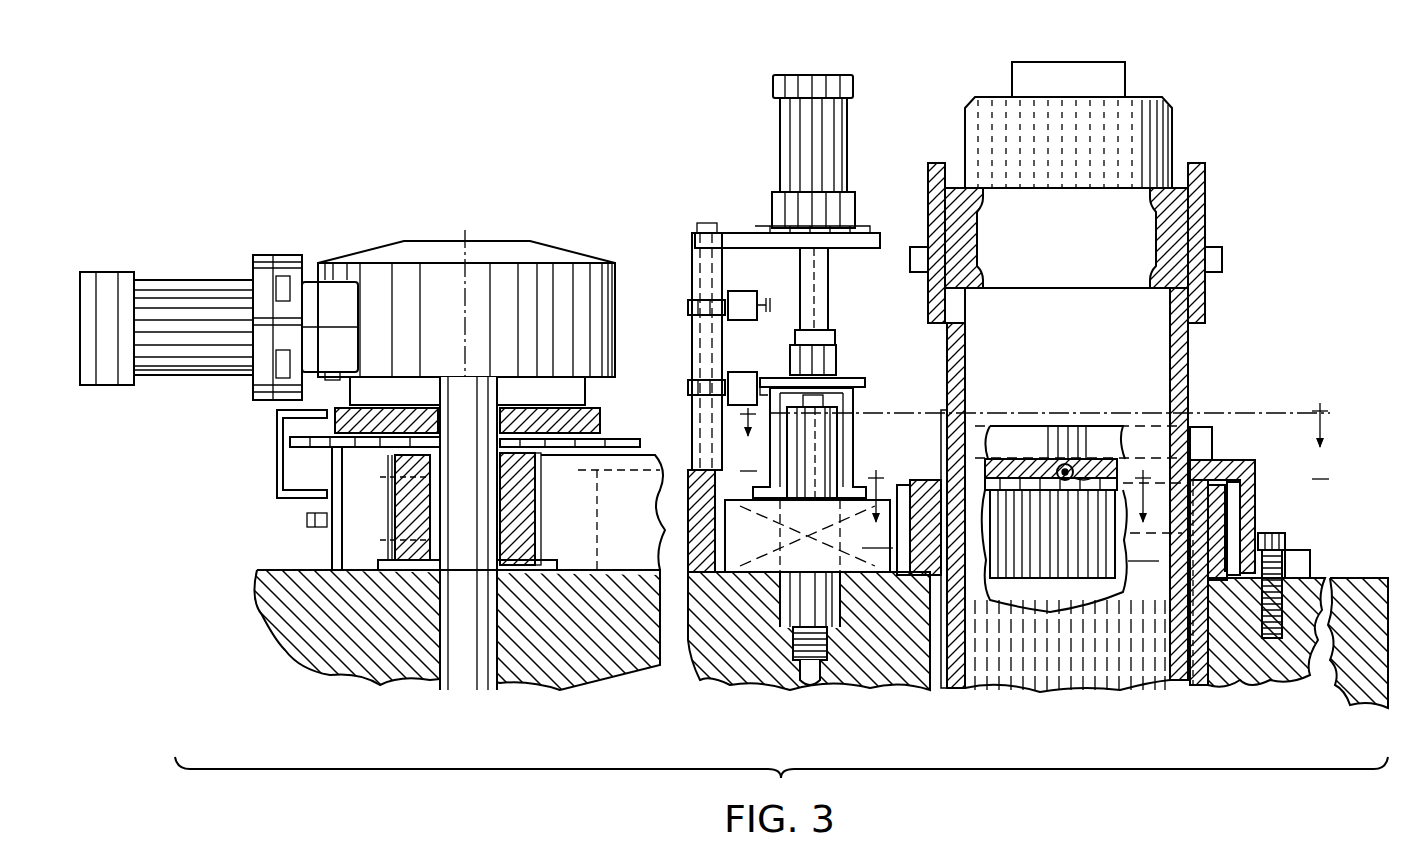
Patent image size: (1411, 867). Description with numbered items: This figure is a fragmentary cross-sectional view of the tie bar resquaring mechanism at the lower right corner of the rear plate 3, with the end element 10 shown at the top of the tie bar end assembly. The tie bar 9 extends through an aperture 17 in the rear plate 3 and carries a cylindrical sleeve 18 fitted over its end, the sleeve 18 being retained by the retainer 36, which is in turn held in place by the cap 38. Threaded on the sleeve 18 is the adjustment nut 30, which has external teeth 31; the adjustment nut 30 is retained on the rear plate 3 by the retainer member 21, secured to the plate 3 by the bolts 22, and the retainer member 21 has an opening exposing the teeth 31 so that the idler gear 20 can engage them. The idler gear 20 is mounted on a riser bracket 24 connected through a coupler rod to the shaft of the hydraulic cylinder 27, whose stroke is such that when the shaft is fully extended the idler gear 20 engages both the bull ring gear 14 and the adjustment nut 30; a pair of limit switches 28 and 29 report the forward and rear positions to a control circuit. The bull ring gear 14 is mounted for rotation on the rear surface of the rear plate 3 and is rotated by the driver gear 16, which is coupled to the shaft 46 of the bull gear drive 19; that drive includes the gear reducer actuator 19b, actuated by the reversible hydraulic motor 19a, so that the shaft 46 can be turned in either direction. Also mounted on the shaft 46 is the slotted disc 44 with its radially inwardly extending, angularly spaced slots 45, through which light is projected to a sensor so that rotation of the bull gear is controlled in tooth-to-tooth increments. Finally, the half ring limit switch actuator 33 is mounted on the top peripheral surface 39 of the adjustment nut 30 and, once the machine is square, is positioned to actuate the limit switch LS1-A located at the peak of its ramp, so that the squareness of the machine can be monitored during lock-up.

The rear plate 3 is at (1350, 580).
The tie bar 9 is at (1110, 338).
The rotary head 10 is at (1112, 76).
The bull ring gear 14 is at (600, 600).
The driver gear 16 is at (395, 525).
The aperture 17 is at (942, 682).
The cylindrical sleeve 18 is at (960, 668).
The bull gear drive 19 is at (360, 246).
The hydraulic motor 19a is at (205, 280).
The gear reducer actuator 19b is at (508, 282).
The idler gear 20 is at (766, 542).
The retainer member 21 is at (1248, 460).
The bolts 22 is at (1292, 540).
The riser bracket 24 is at (860, 400).
The hydraulic cylinder 27 is at (848, 152).
The limit switch 28 is at (740, 378).
The limit switch 29 is at (743, 293).
The adjustment nut 30 is at (1104, 506).
The external teeth 31 is at (845, 377).
The half ring limit switch actuator 33 is at (940, 470).
The retainer 36 is at (1180, 232).
The cap 38 is at (1197, 206).
The top peripheral surface 39 is at (935, 480).
The slotted disc 44 is at (290, 441).
The slots 45 is at (318, 447).
The shaft 46 is at (470, 420).
The limit switch LS1-A is at (1064, 458).